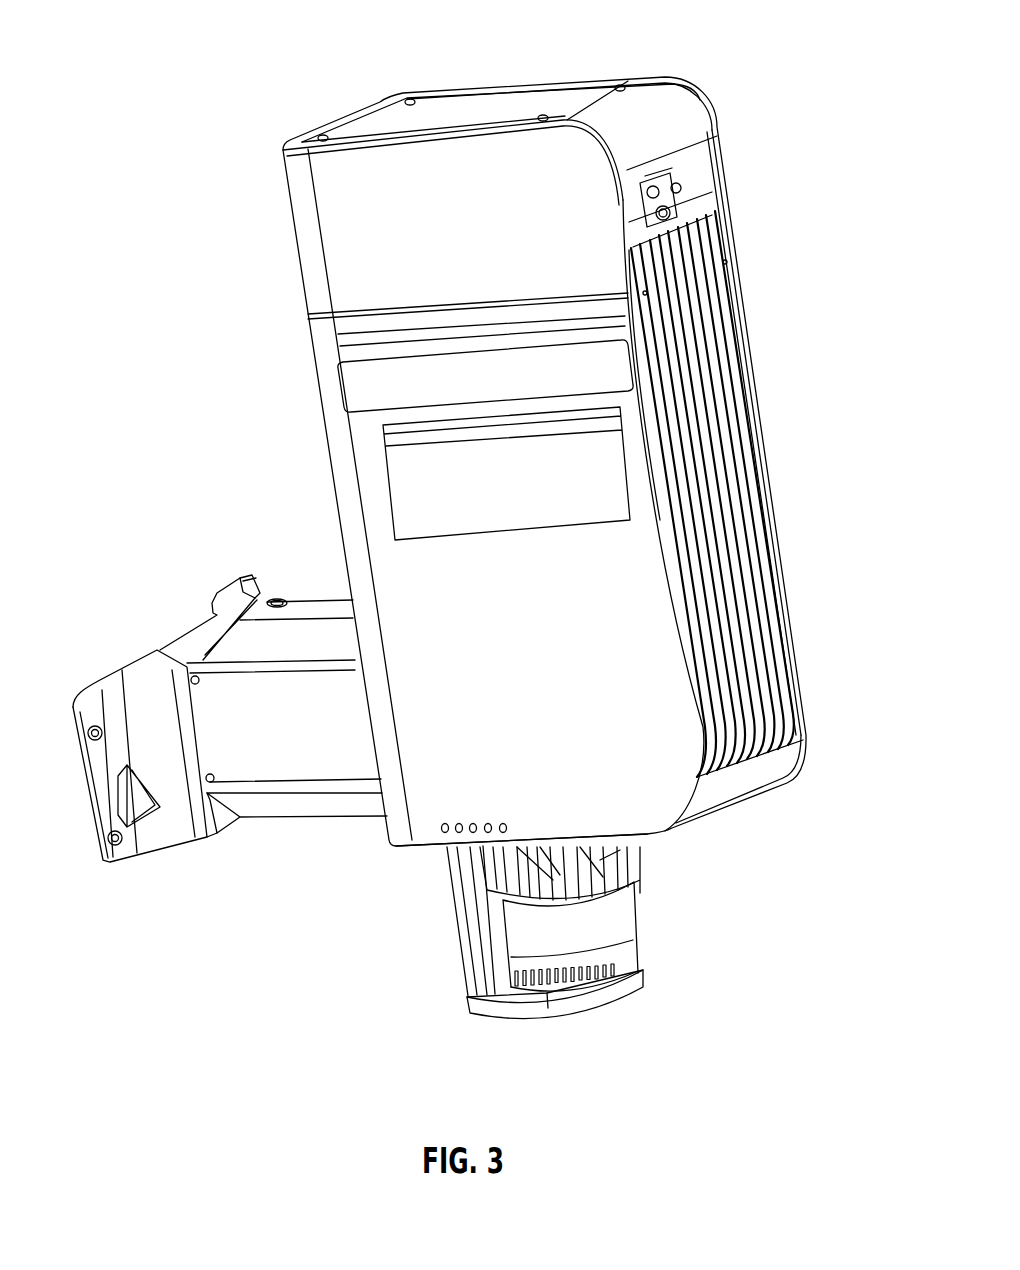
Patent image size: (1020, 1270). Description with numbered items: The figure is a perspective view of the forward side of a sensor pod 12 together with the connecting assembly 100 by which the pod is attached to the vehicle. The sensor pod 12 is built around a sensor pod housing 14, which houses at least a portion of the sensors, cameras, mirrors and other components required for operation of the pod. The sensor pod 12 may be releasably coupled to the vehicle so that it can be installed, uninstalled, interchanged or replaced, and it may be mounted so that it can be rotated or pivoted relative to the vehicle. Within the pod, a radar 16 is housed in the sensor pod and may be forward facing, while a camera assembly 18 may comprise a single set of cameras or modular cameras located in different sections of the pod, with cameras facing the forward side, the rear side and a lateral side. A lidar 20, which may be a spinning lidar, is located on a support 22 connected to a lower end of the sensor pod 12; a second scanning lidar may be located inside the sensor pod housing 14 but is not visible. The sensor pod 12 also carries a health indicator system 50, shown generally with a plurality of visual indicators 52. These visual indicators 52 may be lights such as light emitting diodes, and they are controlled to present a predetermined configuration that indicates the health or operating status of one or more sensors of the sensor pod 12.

The sensor pod 12 is at (750, 70).
The sensor pod housing 14 is at (640, 642).
The radar 16 is at (355, 166).
The camera assembly 18 is at (632, 358).
The lidar 20 is at (639, 906).
The support 22 is at (531, 998).
The health indicator system 50 is at (418, 854).
The visual indicators 52 is at (460, 823).
The connecting assembly 100 is at (278, 584).